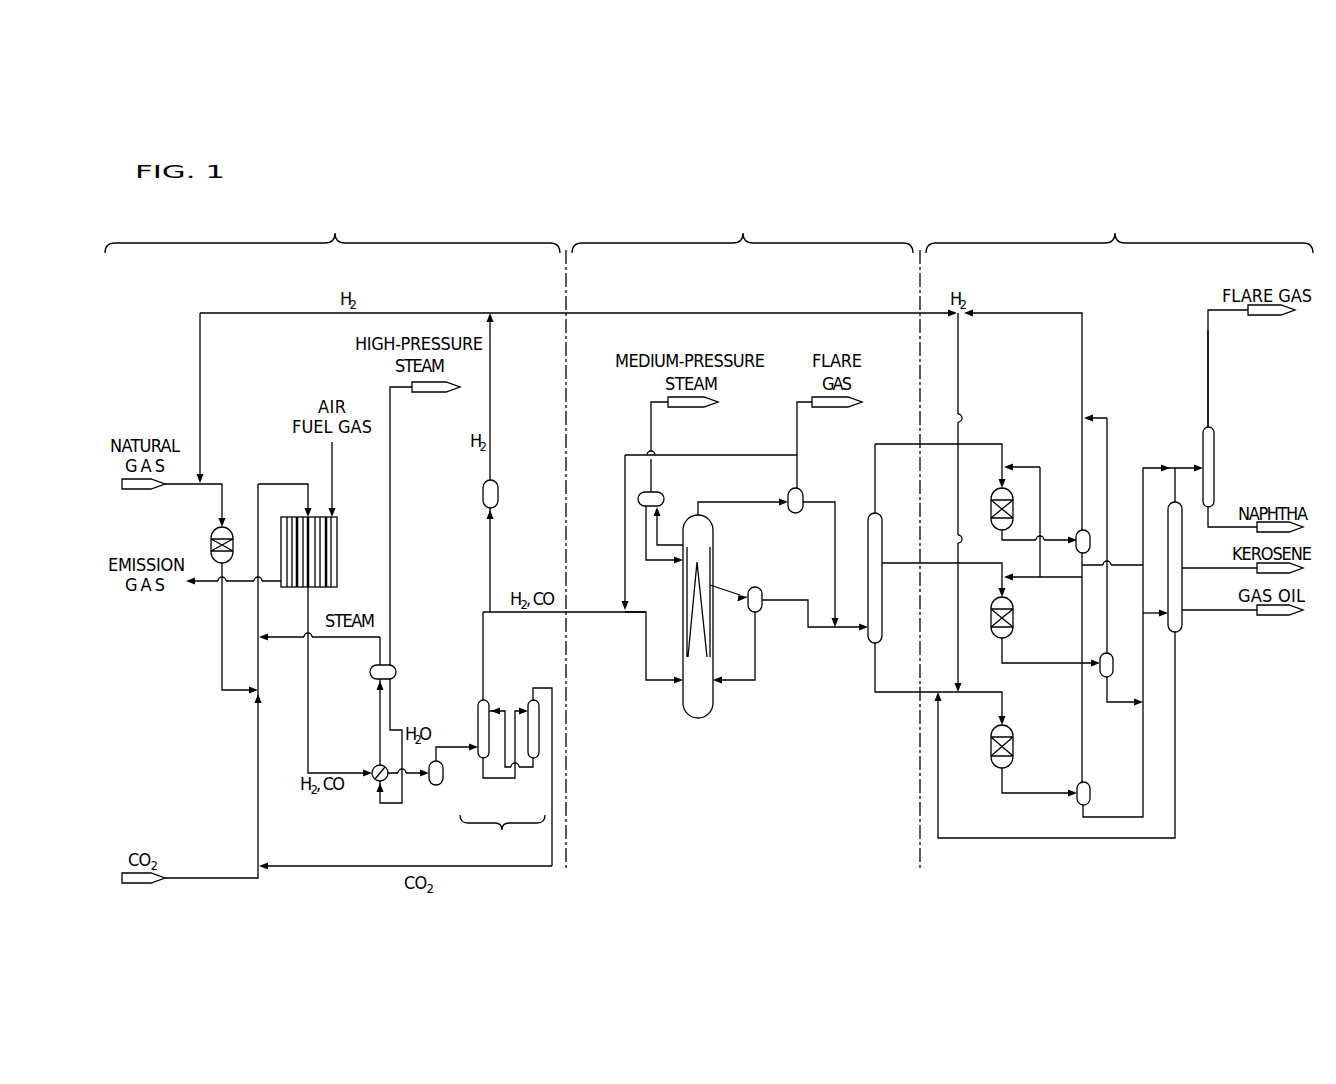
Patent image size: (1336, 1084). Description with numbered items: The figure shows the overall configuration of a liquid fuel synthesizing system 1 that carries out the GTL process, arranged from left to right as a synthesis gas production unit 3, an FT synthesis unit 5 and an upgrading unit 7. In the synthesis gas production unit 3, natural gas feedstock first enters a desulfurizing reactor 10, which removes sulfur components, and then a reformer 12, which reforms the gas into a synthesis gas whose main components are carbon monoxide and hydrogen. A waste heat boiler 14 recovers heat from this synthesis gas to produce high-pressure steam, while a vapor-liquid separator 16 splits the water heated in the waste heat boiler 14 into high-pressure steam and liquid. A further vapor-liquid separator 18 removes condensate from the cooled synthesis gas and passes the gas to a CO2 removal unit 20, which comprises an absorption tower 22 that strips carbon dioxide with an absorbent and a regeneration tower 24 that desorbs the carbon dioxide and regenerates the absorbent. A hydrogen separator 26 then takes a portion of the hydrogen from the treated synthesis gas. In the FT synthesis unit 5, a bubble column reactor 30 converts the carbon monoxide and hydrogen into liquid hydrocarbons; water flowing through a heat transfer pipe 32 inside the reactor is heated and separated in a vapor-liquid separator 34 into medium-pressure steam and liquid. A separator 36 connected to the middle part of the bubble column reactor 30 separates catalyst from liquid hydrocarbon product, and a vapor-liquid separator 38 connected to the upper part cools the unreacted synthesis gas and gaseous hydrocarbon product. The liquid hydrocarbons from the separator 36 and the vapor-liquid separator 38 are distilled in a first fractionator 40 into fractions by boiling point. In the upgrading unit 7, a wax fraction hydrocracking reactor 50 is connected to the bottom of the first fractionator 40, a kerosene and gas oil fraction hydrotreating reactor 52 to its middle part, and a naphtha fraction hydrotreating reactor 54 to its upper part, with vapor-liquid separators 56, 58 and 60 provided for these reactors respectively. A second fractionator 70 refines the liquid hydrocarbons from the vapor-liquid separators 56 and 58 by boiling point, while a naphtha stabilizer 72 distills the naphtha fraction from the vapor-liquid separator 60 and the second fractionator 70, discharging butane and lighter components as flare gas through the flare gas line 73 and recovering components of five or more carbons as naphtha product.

The liquid fuel synthesizing system 1 is at (876, 213).
The synthesis gas production unit 3 is at (332, 229).
The FT synthesis unit 5 is at (742, 229).
The upgrading unit 7 is at (1119, 229).
The desulfurizing reactor 10 is at (210, 534).
The reformer 12 is at (338, 525).
The waste heat boiler 14 is at (373, 790).
The vapor-liquid separator 16 is at (369, 670).
The vapor-liquid separator 18 is at (436, 786).
The CO2 removal unit 20 is at (502, 836).
The absorption tower 22 is at (479, 760).
The regeneration tower 24 is at (530, 760).
The hydrogen separator 26 is at (498, 487).
The bubble column reactor 30 is at (706, 716).
The heat transfer pipe 32 is at (709, 562).
The vapor-liquid separator 34 is at (665, 497).
The separator 36 is at (763, 612).
The vapor-liquid separator 38 is at (788, 493).
The first fractionator 40 is at (865, 510).
The wax fraction hydrocracking reactor 50 is at (1014, 745).
The kerosene and gas oil fraction hydrotreating reactor 52 is at (1014, 615).
The naphtha fraction hydrotreating reactor 54 is at (1014, 495).
The vapor-liquid separator 56 is at (1090, 782).
The vapor-liquid separator 58 is at (1110, 650).
The vapor-liquid separator 60 is at (1090, 532).
The second fractionator 70 is at (1183, 624).
The naphtha stabilizer 72 is at (1215, 443).
The flare gas line 73 is at (1210, 357).